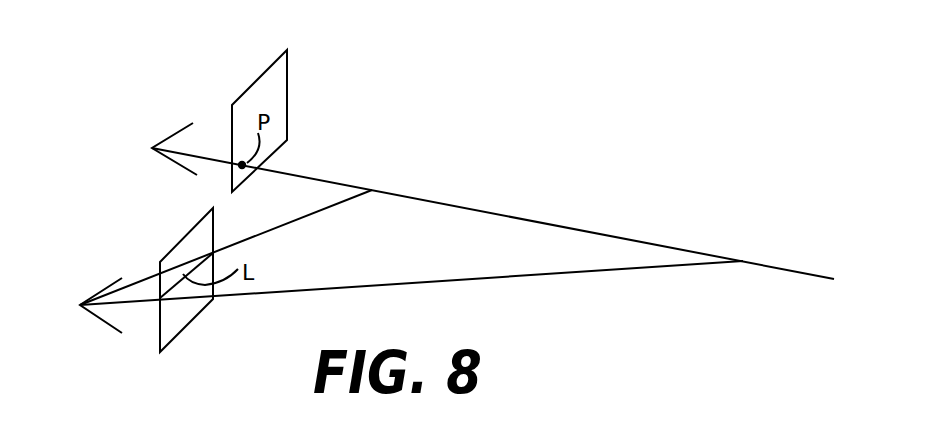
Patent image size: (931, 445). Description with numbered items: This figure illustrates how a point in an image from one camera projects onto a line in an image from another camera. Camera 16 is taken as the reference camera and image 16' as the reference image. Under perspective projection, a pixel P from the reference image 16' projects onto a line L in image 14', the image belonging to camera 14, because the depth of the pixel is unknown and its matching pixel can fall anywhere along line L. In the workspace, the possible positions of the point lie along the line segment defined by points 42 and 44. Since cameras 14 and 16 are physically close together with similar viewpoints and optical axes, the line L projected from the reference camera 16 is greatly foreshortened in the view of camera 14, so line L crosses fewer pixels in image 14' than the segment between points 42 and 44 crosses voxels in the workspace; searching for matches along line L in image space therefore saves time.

The camera 14 is at (88, 290).
The image 14' is at (177, 272).
The reference camera 16 is at (164, 136).
The reference image 16' is at (251, 121).
The point 42 is at (372, 190).
The point 44 is at (747, 259).